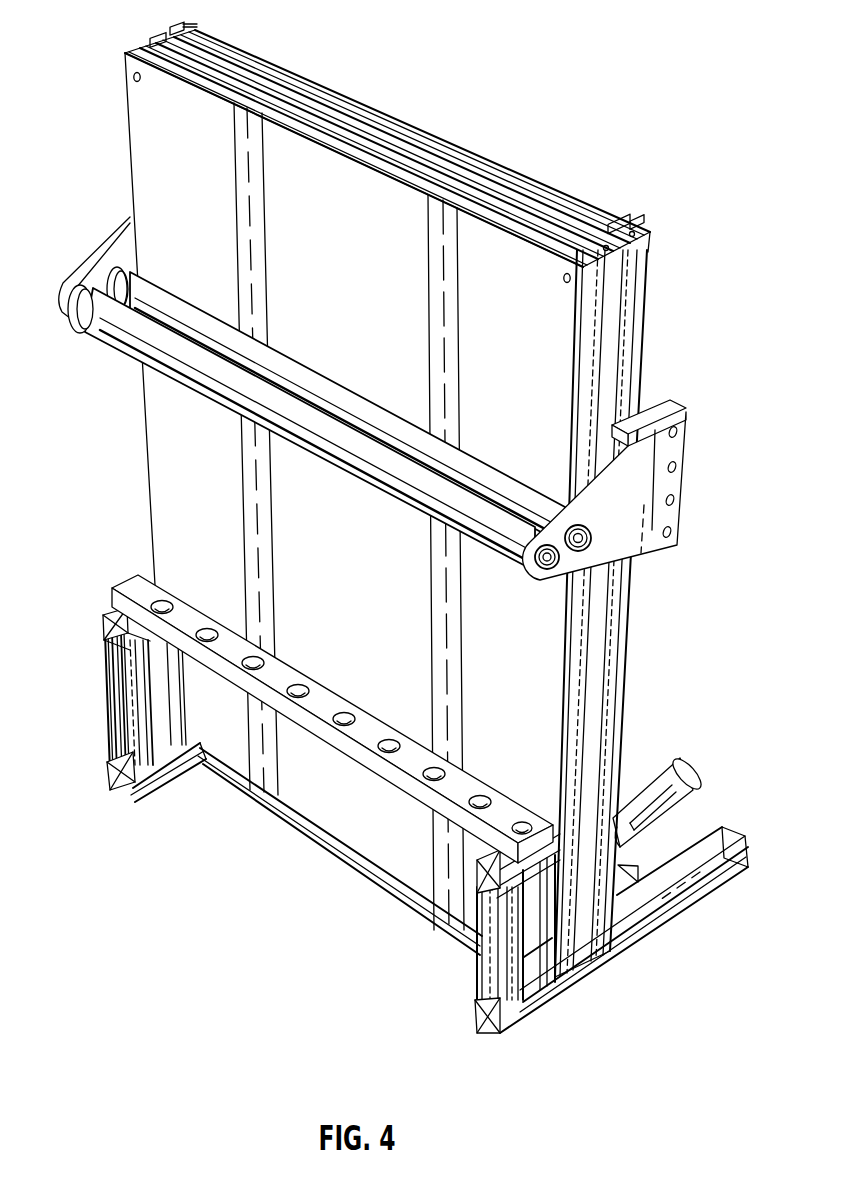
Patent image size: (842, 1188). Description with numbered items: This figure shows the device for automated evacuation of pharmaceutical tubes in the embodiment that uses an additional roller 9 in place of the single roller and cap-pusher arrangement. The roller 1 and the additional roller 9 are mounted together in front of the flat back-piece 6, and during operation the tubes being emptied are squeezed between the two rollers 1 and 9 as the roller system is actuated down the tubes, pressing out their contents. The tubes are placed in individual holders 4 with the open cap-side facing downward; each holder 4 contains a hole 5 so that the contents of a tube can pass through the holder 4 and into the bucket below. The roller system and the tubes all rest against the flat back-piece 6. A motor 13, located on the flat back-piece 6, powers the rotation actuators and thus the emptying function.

The roller 1 is at (168, 299).
The additional roller 9 is at (193, 370).
The flat back-piece 6 is at (142, 168).
The holder 4 is at (385, 772).
The hole 5 is at (340, 709).
The motor 13 is at (667, 761).